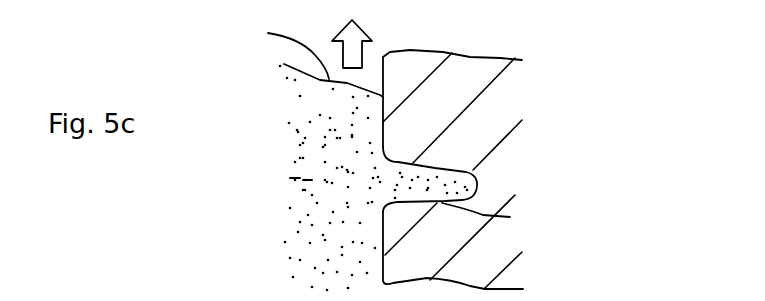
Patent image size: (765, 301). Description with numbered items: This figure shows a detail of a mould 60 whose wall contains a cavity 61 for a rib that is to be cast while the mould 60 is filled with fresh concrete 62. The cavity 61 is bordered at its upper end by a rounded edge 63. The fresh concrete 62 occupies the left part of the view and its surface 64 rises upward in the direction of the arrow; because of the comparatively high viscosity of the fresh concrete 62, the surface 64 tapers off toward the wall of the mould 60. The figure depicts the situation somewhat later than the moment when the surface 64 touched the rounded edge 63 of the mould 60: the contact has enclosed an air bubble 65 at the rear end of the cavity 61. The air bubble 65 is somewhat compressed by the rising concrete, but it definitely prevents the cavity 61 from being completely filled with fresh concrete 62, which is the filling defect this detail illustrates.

The mould 60 is at (470, 55).
The cavity 61 is at (510, 217).
The fresh concrete 62 is at (343, 110).
The rounded edge 63 is at (395, 148).
The surface 64 is at (278, 48).
The air bubble 65 is at (475, 168).